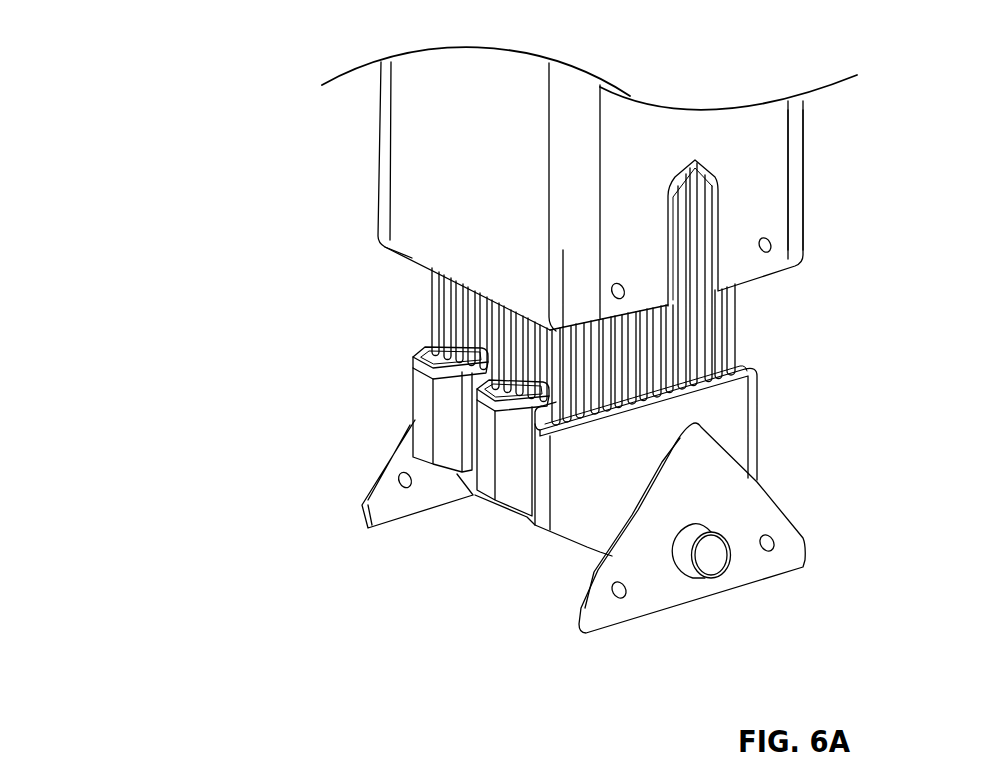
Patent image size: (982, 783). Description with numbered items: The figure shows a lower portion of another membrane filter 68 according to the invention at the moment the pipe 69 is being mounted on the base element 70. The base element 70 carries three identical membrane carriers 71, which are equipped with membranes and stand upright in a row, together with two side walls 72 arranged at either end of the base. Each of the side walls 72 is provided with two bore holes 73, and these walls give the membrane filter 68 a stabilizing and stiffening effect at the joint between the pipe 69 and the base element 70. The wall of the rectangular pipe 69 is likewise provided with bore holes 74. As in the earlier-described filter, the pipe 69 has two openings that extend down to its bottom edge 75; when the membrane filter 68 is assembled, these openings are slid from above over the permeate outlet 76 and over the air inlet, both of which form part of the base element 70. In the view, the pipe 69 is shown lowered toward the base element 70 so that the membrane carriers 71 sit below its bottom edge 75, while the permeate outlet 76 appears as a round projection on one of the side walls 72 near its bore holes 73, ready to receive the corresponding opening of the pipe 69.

The membrane filter 68 is at (174, 198).
The pipe 69 is at (773, 163).
The base element 70 is at (278, 512).
The membrane carriers 71 is at (547, 472).
The side walls 72 is at (368, 522).
The bore holes 73 is at (398, 479).
The bore holes 74 is at (618, 283).
The bottom edge 75 is at (412, 258).
The permeate outlet 76 is at (713, 543).